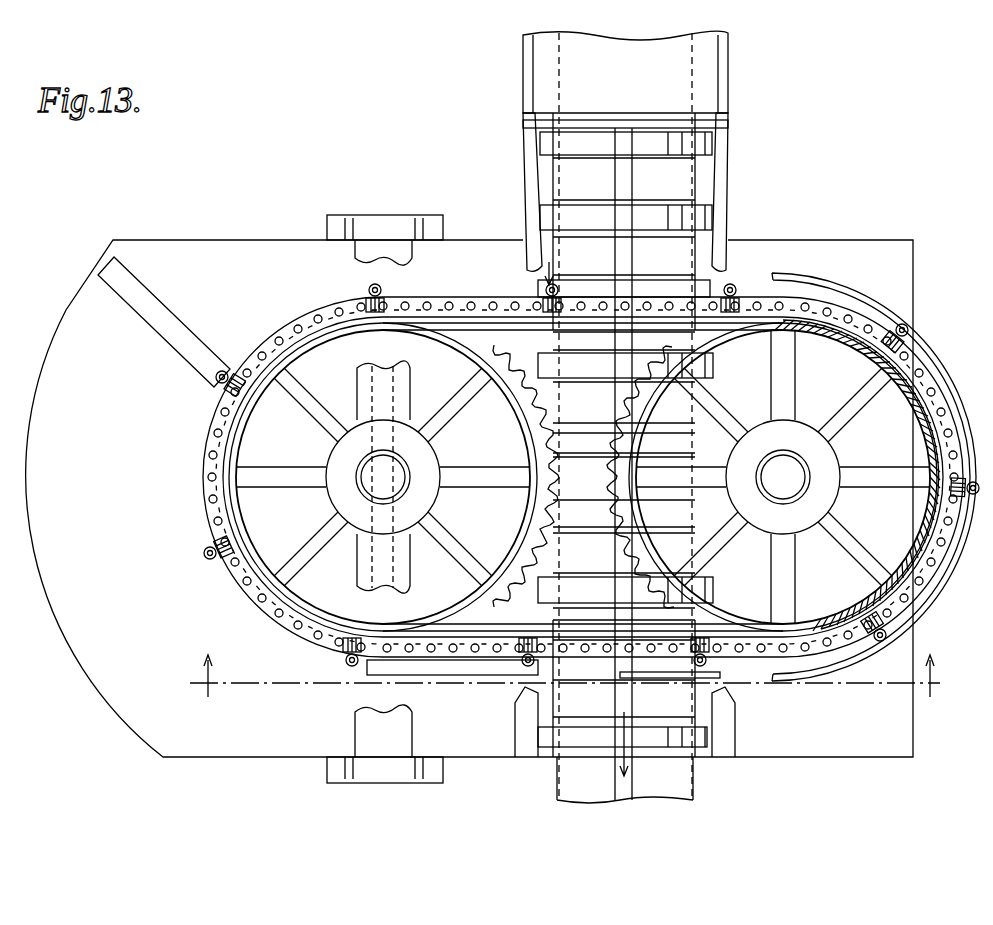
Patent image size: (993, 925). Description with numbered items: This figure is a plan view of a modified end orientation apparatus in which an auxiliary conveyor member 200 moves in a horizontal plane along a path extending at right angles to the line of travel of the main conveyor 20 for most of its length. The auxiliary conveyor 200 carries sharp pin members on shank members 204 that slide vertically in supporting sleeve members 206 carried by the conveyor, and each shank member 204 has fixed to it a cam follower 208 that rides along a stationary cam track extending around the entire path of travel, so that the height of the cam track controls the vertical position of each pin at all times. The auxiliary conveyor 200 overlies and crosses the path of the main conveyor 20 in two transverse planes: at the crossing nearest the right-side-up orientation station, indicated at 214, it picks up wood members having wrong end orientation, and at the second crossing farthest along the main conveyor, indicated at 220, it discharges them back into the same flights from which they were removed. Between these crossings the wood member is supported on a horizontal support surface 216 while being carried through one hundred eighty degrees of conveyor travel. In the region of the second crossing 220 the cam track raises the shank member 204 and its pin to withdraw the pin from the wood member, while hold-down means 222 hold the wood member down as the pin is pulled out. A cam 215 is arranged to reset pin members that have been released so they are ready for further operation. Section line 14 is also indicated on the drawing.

The main conveyor 20 is at (680, 180).
The auxiliary conveyor member 200 is at (830, 300).
The shank member 204 is at (566, 487).
The supporting sleeve member 206 is at (370, 286).
The cam follower 208 is at (378, 314).
The first crossing 214 is at (538, 275).
The cam 215 is at (810, 682).
The horizontal support surface 216 is at (154, 393).
The second crossing 220 is at (722, 695).
The hold-down means 222 is at (667, 679).
The section line 14 is at (557, 676).